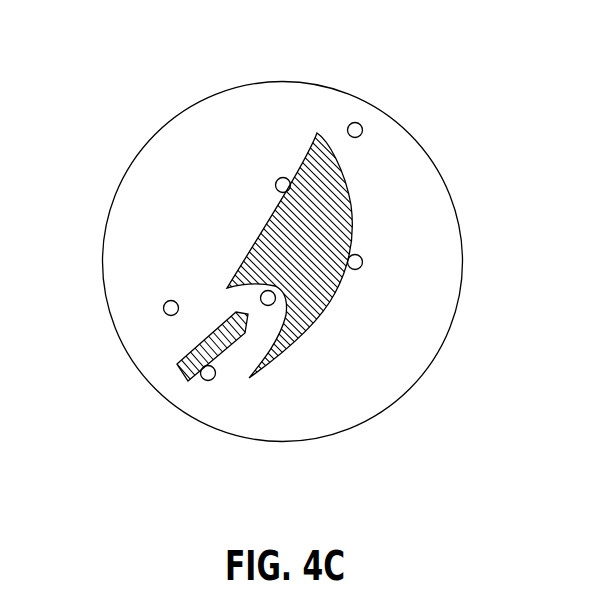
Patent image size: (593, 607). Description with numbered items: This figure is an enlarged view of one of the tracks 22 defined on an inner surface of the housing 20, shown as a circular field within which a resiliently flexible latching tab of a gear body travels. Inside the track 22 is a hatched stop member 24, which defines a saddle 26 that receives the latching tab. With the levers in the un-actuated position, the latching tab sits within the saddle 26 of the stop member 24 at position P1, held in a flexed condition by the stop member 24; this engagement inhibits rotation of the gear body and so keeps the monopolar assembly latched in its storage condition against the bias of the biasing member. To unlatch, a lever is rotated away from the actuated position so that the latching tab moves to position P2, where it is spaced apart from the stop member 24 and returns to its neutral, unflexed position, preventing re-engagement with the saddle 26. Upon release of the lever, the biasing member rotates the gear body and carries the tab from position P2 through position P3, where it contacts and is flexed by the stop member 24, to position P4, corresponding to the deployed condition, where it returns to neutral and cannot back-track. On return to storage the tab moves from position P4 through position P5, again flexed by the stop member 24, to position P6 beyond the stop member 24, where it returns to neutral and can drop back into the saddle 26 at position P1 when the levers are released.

The housing 20 is at (162, 197).
The track 22 is at (239, 217).
The stop member 24 is at (333, 188).
The saddle 26 is at (283, 291).
The position P1 is at (268, 306).
The position P2 is at (167, 301).
The position P3 is at (283, 178).
The position P4 is at (355, 122).
The position P5 is at (362, 259).
The position P6 is at (208, 380).